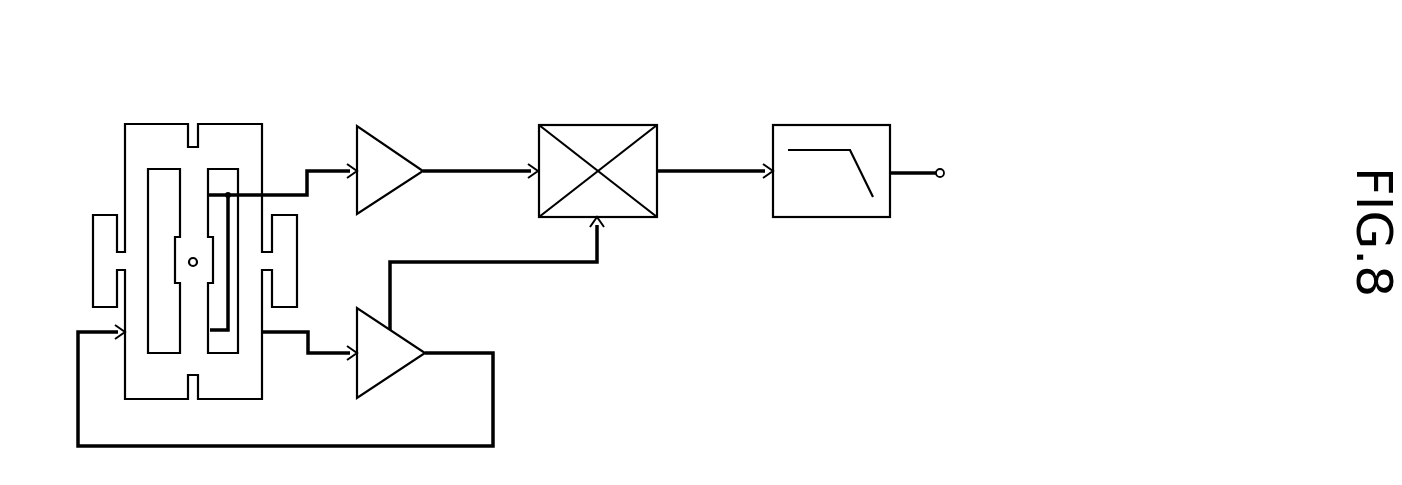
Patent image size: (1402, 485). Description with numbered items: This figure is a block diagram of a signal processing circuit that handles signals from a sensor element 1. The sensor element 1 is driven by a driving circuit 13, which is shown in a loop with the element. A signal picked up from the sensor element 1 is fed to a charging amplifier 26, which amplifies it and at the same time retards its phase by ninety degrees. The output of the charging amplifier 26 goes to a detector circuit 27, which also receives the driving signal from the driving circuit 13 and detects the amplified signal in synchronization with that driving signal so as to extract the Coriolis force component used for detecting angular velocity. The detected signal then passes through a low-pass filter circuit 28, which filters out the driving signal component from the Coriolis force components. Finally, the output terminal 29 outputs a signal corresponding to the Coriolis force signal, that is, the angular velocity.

The sensor element 1 is at (228, 122).
The driving circuit 13 is at (362, 307).
The charging amplifier 26 is at (388, 143).
The detector circuit 27 is at (608, 121).
The low-pass filter circuit 28 is at (839, 123).
The output terminal 29 is at (943, 165).